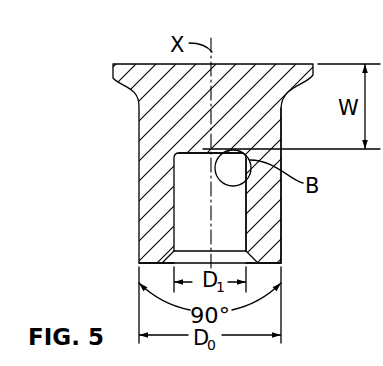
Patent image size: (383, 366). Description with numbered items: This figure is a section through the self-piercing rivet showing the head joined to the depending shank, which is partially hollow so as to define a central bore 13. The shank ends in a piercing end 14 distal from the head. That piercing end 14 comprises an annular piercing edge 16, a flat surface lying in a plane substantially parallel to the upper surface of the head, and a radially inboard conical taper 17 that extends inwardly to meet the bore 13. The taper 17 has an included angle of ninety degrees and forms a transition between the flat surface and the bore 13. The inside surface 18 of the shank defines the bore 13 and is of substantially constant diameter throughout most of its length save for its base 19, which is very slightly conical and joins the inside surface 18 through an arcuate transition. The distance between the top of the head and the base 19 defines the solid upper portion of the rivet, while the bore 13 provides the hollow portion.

The central bore 13 is at (187, 203).
The piercing end 14 is at (133, 262).
The annular piercing edge 16 is at (282, 268).
The conical taper 17 is at (282, 246).
The inside surface of the shank 18 is at (250, 212).
The base of the bore 19 is at (183, 153).